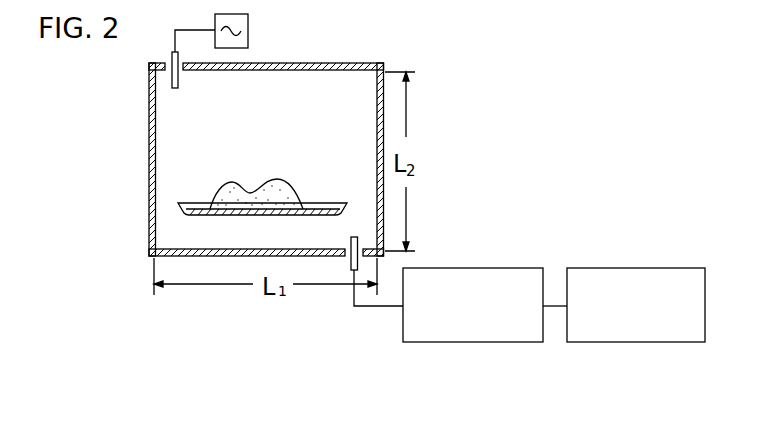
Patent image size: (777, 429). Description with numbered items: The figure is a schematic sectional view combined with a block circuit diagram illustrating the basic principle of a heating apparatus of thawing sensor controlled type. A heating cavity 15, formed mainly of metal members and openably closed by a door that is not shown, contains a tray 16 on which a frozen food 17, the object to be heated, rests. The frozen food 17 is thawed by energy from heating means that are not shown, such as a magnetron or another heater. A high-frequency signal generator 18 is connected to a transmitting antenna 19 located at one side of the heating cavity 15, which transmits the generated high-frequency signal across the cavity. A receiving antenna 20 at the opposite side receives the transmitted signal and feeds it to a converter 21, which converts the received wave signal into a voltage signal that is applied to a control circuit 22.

The heating cavity 15 is at (337, 76).
The tray 16 is at (263, 216).
The frozen food 17 is at (287, 181).
The high-frequency signal generator 18 is at (248, 23).
The transmitting antenna 19 is at (178, 82).
The receiving antenna 20 is at (351, 243).
The converter 21 is at (490, 268).
The control circuit 22 is at (617, 268).